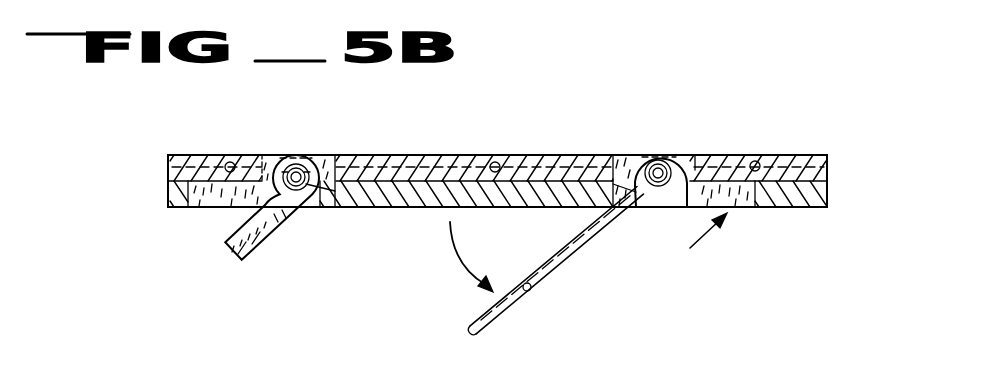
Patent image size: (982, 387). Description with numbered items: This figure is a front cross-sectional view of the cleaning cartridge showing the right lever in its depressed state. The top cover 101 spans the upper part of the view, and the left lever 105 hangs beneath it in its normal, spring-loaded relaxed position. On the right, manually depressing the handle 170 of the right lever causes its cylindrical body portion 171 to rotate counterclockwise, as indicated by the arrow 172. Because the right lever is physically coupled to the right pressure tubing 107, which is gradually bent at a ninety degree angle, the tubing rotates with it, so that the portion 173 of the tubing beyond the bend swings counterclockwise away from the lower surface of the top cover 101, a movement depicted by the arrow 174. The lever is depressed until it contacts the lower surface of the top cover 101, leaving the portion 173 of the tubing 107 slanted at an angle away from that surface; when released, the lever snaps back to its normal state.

The top cover 101 is at (826, 167).
The left lever 105 is at (262, 233).
The right pressure tubing 107 is at (577, 246).
The handle 170 is at (748, 207).
The cylindrical body portion 171 is at (660, 147).
The arrow 172 is at (700, 246).
The portion of the tubing beyond the bend 173 is at (565, 244).
The arrow 174 is at (466, 250).